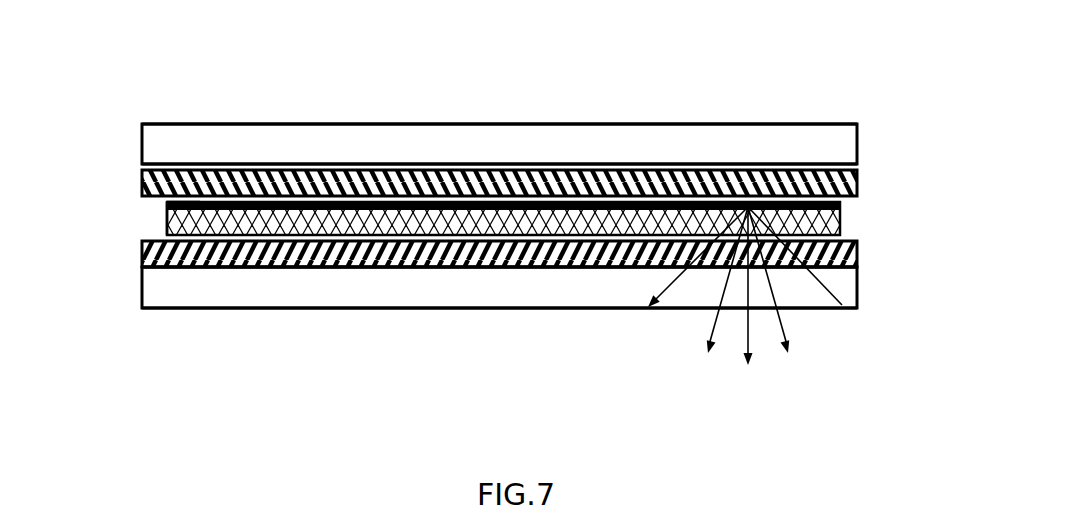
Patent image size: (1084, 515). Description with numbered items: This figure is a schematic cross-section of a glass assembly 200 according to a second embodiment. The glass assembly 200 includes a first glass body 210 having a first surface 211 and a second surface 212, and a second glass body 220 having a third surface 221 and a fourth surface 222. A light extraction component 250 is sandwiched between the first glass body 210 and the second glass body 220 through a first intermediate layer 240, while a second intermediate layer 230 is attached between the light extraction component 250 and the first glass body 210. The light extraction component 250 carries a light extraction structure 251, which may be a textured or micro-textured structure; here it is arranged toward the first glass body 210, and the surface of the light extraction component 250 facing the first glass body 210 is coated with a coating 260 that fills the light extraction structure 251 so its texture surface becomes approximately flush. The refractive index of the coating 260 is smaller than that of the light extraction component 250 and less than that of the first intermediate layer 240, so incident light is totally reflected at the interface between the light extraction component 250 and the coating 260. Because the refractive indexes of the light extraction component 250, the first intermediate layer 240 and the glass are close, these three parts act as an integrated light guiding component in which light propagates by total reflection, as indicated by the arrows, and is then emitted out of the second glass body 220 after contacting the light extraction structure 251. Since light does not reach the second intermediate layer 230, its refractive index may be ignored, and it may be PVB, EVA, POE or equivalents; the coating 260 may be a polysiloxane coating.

The glass assembly 200 is at (537, 30).
The first glass body 210 is at (723, 147).
The first surface 211 is at (393, 124).
The second surface 212 is at (562, 161).
The second glass body 220 is at (232, 298).
The third surface 221 is at (437, 270).
The fourth surface 222 is at (561, 309).
The second intermediate layer 230 is at (146, 182).
The first intermediate layer 240 is at (146, 258).
The light extraction component 250 is at (840, 222).
The light extraction structure 251 is at (840, 205).
The coating 260 is at (167, 204).